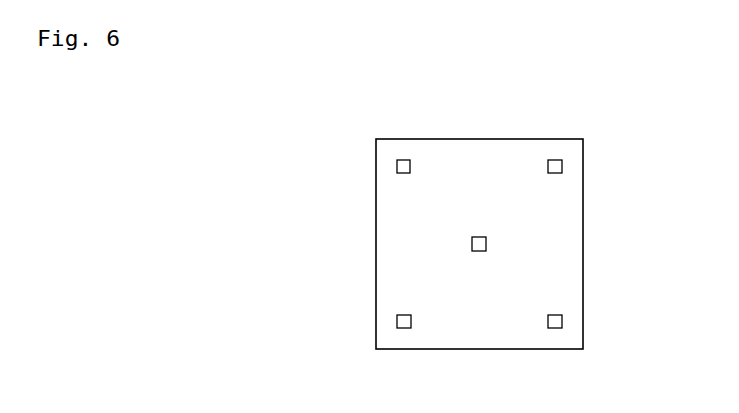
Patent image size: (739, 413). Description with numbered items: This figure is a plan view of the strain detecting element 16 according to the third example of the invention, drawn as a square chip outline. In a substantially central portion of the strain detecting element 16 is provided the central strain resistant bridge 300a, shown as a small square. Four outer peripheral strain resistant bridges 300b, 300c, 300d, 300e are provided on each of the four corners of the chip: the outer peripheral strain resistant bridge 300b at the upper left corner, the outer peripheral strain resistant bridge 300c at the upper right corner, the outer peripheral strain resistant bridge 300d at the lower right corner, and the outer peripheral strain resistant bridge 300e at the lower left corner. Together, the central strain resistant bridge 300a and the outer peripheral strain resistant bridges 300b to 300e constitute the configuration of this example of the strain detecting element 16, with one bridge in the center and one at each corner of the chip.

The strain detecting element 16 is at (575, 245).
The central strain resistant bridge 300a is at (478, 237).
The outer peripheral strain resistant bridge 300b is at (397, 165).
The outer peripheral strain resistant bridge 300c is at (557, 165).
The outer peripheral strain resistant bridge 300d is at (560, 322).
The outer peripheral strain resistant bridge 300e is at (397, 320).